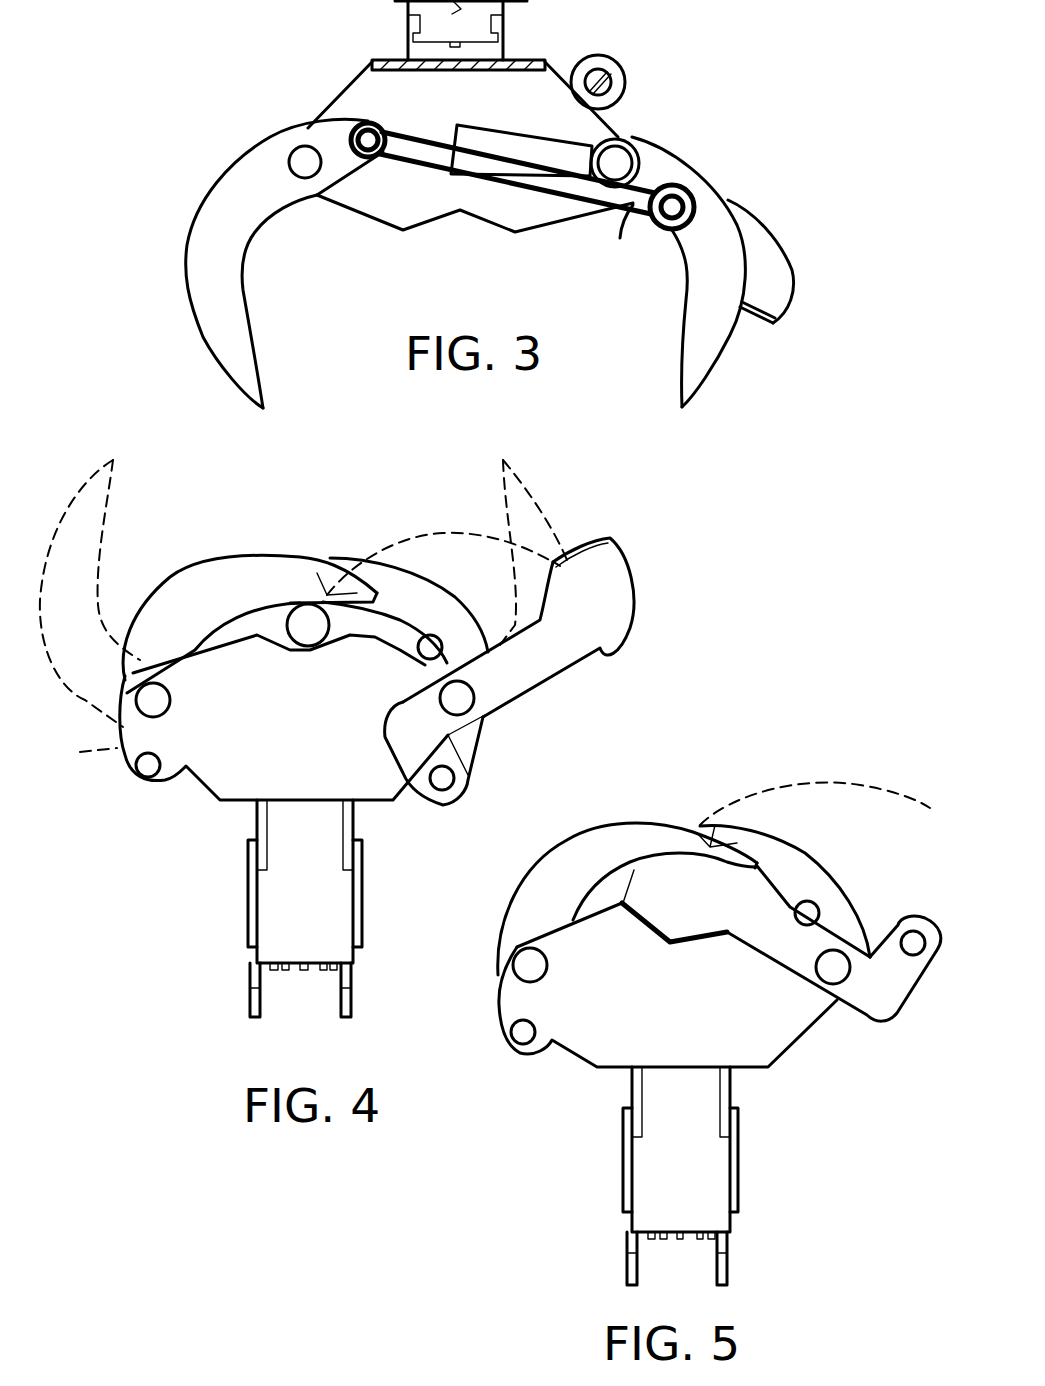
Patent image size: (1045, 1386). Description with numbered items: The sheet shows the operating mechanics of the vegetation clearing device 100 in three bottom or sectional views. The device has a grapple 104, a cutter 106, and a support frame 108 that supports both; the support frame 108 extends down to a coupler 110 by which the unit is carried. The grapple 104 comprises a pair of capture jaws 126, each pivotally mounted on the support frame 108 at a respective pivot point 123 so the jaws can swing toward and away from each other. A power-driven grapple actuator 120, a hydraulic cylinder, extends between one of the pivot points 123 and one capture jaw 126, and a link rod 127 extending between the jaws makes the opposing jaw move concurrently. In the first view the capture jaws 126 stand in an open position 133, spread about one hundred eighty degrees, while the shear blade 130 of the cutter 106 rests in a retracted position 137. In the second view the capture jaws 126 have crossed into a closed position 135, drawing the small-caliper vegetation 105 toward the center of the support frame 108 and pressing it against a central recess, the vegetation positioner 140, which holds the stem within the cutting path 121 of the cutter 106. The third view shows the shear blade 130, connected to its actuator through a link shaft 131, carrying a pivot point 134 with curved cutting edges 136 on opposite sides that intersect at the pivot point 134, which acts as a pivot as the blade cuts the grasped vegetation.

In FIG. 3, the vegetation clearing device 100 is at (180, 108).
In FIG. 4, the vegetation clearing device 100 is at (150, 440).
In FIG. 5, the vegetation clearing device 100 is at (570, 1167).
In FIG. 3, the grapple 104 is at (187, 197).
In FIG. 4, the grapple 104 is at (313, 550).
In FIG. 5, the grapple 104 is at (575, 825).
In FIG. 4, the small-caliper vegetation 105 is at (305, 641).
In FIG. 3, the cutter 106 is at (682, 272).
In FIG. 4, the cutter 106 is at (620, 660).
In FIG. 5, the cutter 106 is at (770, 883).
In FIG. 3, the support frame 108 is at (370, 62).
In FIG. 4, the support frame 108 is at (220, 800).
In FIG. 5, the support frame 108 is at (777, 1060).
In FIG. 4, the coupler 110 is at (253, 996).
In FIG. 5, the coupler 110 is at (628, 1267).
In FIG. 3, the power-driven grapple actuator 120 is at (574, 145).
In FIG. 4, the cutting path 121 is at (443, 530).
In FIG. 5, the cutting path 121 is at (822, 782).
In FIG. 3, the pivot point 123 is at (287, 152).
In FIG. 4, the pivot point 123 is at (140, 712).
In FIG. 5, the pivot point 123 is at (515, 952).
In FIG. 3, the capture jaw 126 is at (255, 232).
In FIG. 4, the capture jaw 126 is at (243, 555).
In FIG. 5, the capture jaw 126 is at (647, 822).
In FIG. 3, the link rod 127 is at (638, 212).
In FIG. 3, the shear blade 130 is at (797, 260).
In FIG. 4, the shear blade 130 is at (640, 590).
In FIG. 5, the shear blade 130 is at (780, 958).
In FIG. 3, the link shaft 131 is at (600, 82).
In FIG. 4, the link shaft 131 is at (445, 782).
In FIG. 5, the link shaft 131 is at (913, 943).
In FIG. 3, the open position 133 is at (193, 158).
In FIG. 5, the pivot point 134 is at (666, 943).
In FIG. 4, the closed position 135 is at (123, 802).
In FIG. 5, the closed position 135 is at (795, 760).
In FIG. 5, the cutting edge 136 is at (653, 928).
In FIG. 3, the retracted position 137 is at (800, 320).
In FIG. 4, the retracted position 137 is at (650, 635).
In FIG. 3, the vegetation positioner 140 is at (485, 222).
In FIG. 4, the vegetation positioner 140 is at (330, 648).